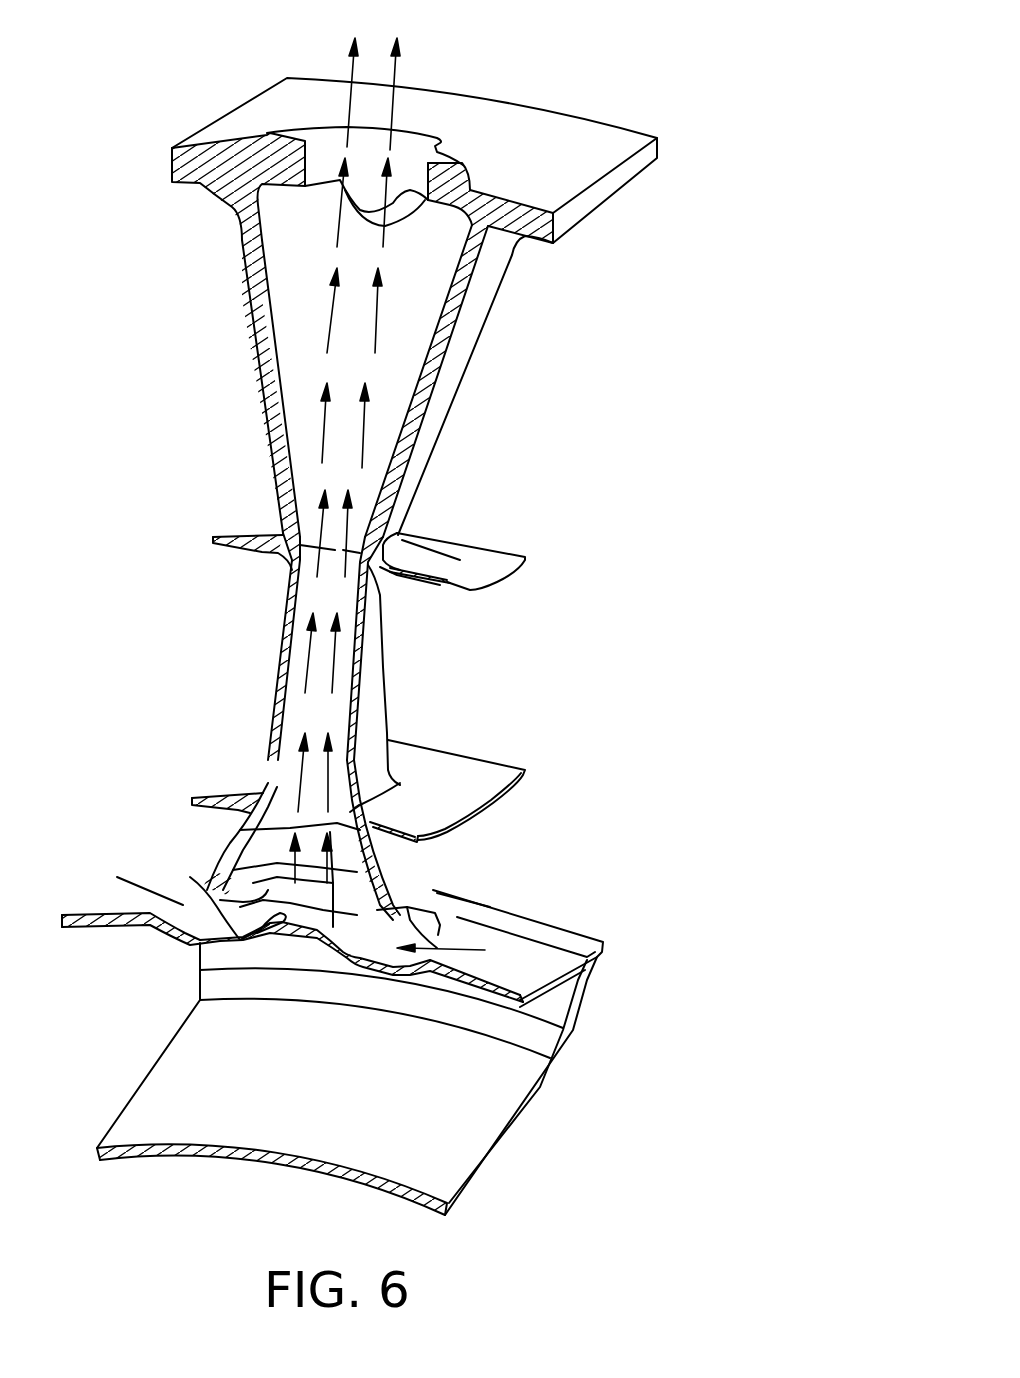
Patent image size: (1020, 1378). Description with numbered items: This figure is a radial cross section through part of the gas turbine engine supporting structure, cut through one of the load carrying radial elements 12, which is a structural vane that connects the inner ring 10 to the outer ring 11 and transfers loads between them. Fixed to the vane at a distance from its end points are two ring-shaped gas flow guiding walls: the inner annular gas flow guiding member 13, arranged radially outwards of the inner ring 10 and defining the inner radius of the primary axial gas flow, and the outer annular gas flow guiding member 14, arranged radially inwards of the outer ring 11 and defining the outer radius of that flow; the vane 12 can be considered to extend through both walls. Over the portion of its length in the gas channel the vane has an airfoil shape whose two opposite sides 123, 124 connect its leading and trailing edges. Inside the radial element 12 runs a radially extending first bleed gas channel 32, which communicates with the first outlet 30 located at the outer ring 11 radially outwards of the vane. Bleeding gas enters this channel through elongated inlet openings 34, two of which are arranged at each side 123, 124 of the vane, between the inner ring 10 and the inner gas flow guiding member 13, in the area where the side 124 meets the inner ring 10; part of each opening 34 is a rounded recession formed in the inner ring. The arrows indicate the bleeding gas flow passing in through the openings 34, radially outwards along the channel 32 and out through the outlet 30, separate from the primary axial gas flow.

The inner ring 10 is at (545, 955).
The outer ring 11 is at (570, 152).
The radial element 12 is at (267, 368).
The inner annular gas flow guiding member 13 is at (450, 778).
The outer annular gas flow guiding member 14 is at (487, 563).
The first outlet 30 is at (410, 155).
The first bleed gas channel 32 is at (418, 308).
The elongated inlet opening 34 is at (427, 893).
The side 123 is at (270, 677).
The side 124 is at (372, 717).